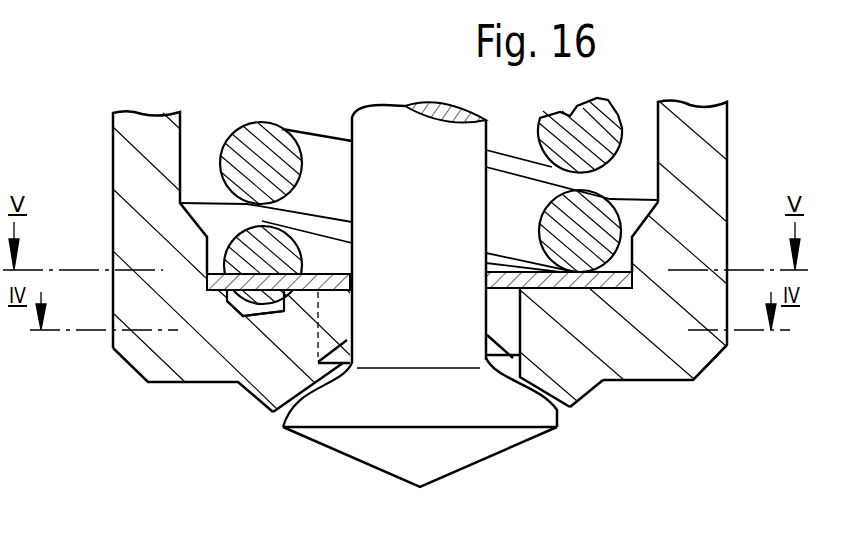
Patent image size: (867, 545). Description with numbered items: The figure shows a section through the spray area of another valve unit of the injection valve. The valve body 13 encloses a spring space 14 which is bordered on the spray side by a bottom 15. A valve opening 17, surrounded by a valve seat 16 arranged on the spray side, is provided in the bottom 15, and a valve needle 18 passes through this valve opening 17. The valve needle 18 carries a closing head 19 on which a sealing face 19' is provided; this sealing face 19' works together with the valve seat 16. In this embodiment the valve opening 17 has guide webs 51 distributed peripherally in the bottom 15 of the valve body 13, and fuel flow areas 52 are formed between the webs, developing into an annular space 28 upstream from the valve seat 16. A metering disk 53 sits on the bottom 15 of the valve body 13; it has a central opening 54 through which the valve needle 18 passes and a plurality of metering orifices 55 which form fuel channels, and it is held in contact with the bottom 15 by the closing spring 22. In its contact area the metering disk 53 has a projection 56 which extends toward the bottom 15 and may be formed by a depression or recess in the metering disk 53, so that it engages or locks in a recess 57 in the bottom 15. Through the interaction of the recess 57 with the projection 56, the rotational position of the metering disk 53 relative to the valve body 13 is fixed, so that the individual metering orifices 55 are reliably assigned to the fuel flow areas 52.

The valve body 13 is at (700, 138).
The spring space 14 is at (207, 170).
The bottom 15 is at (653, 382).
The valve seat 16 is at (300, 385).
The valve opening 17 is at (305, 375).
The valve needle 18 is at (432, 265).
The closing head 19 is at (420, 477).
The sealing face 19' is at (420, 477).
The closing spring 22 is at (587, 138).
The annular space 28 is at (508, 362).
The guide webs 51 is at (348, 338).
The fuel flow areas 52 is at (573, 387).
The metering disk 53 is at (635, 355).
The central opening 54 is at (366, 265).
The metering orifices 55 is at (597, 385).
The projection 56 is at (238, 314).
The recess 57 is at (228, 307).